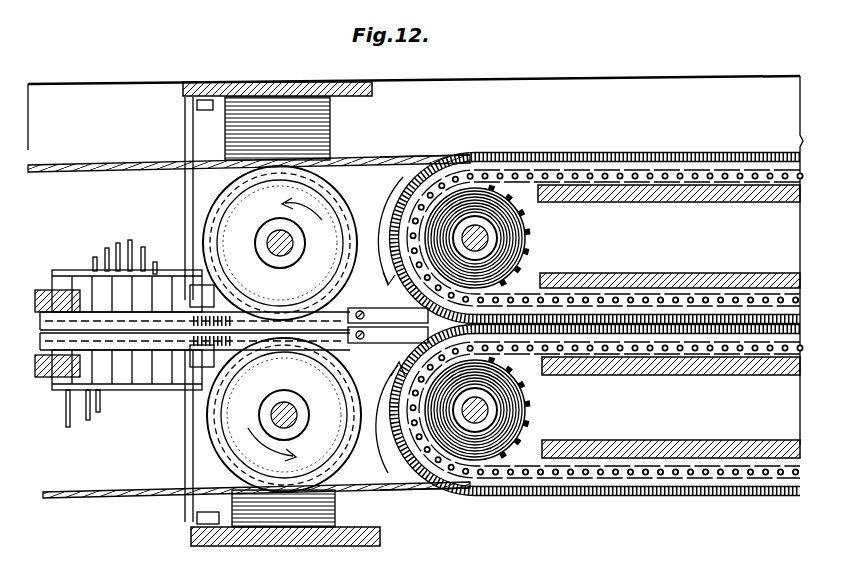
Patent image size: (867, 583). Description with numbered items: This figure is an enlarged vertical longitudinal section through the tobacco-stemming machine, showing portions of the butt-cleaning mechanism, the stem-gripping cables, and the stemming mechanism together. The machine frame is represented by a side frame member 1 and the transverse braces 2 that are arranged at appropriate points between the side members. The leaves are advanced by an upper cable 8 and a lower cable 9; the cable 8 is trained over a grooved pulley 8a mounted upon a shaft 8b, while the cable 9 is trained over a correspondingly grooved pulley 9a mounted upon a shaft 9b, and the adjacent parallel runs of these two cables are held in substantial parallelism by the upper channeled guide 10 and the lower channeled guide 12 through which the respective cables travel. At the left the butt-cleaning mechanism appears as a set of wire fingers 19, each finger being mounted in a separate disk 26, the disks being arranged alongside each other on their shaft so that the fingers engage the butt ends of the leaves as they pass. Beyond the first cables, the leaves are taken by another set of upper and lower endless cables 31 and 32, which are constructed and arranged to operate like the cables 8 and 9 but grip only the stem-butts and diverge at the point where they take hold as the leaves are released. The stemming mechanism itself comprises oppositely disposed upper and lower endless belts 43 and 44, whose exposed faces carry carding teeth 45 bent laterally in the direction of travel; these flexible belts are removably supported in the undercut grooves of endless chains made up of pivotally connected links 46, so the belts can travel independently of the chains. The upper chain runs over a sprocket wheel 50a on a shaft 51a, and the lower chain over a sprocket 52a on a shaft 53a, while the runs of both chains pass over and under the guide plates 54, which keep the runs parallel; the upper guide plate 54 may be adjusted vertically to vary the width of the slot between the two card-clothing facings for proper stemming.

The side frame member 1 is at (627, 83).
The transverse brace 2 is at (268, 67).
The cable 8 is at (100, 170).
The grooved pulley 8a is at (280, 243).
The shaft 8b is at (277, 256).
The cable 9 is at (146, 497).
The grooved pulley 9a is at (252, 415).
The shaft 9b is at (284, 415).
The upper channeled guide 10 is at (114, 278).
The lower channeled guide 12 is at (55, 380).
The wire finger 19 is at (133, 250).
The disk 26 is at (157, 392).
The upper endless cable 31 is at (390, 160).
The lower endless cable 32 is at (421, 488).
The upper endless belt 43 is at (567, 163).
The lower endless belt 44 is at (582, 478).
The carding teeth 45 is at (743, 161).
The link 46 is at (652, 168).
The sprocket wheel 50a is at (523, 262).
The shaft 51a is at (482, 242).
The sprocket 52a is at (523, 434).
The shaft 53a is at (482, 412).
The guide plate 54 is at (727, 199).